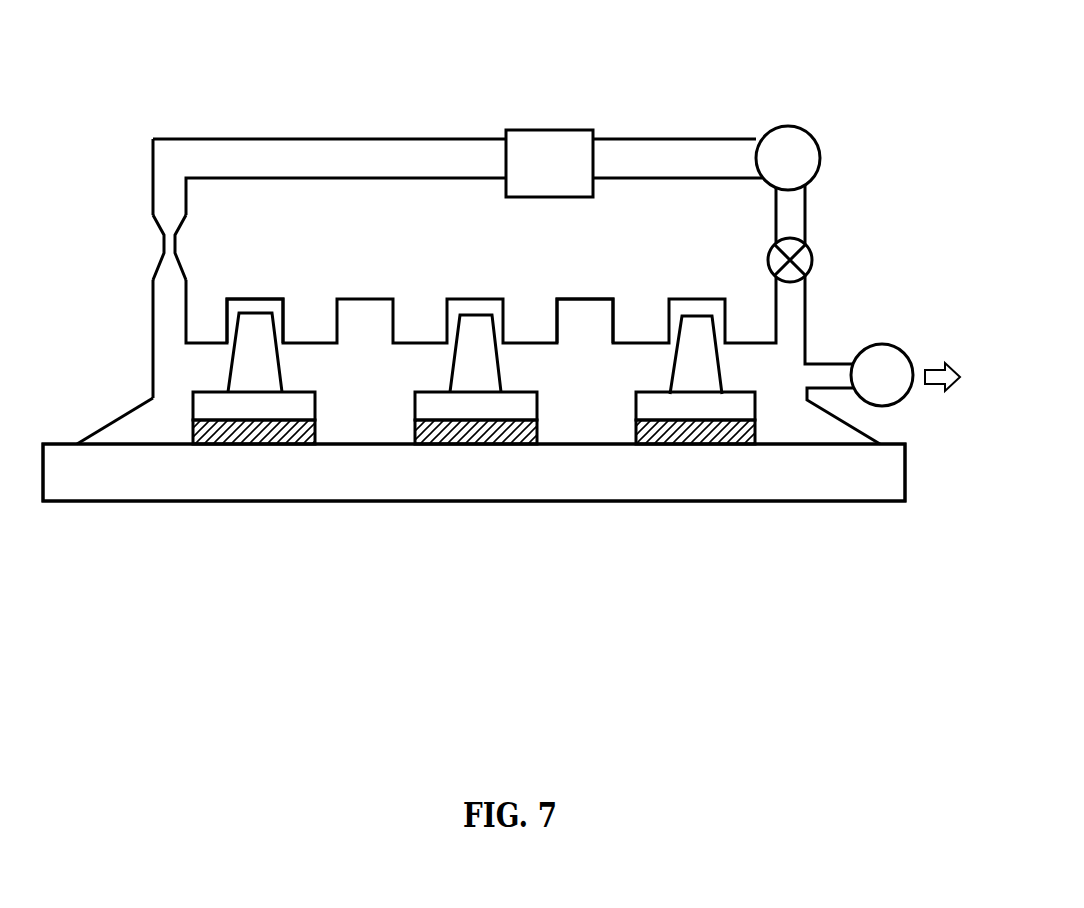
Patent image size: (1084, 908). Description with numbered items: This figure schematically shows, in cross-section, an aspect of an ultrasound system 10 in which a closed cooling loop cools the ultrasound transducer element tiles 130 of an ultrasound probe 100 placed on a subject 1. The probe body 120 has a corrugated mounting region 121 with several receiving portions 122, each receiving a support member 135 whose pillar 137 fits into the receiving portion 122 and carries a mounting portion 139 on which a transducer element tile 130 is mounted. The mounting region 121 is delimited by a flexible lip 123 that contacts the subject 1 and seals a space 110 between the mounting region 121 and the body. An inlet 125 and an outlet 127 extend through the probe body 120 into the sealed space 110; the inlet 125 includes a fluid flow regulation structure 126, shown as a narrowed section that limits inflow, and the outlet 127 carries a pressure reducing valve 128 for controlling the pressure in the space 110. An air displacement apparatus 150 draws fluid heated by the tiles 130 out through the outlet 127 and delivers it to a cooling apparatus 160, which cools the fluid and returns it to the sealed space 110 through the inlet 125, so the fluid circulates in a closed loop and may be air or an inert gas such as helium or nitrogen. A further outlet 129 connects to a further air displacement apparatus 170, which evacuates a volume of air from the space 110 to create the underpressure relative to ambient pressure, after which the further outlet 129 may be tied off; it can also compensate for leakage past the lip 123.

The subject 1 is at (543, 485).
The ultrasound system 10 is at (512, 699).
The ultrasound probe 100 is at (124, 118).
The sealed space 110 is at (372, 427).
The probe body 120 is at (443, 312).
The mounting region 121 is at (252, 312).
The receiving portion 122 is at (585, 312).
The flexible lip 123 is at (127, 423).
The inlet 125 is at (172, 291).
The fluid flow regulation structure 126 is at (173, 247).
The outlet 127 is at (792, 298).
The pressure reducing valve 128 is at (805, 257).
The further outlet 129 is at (808, 378).
The ultrasound transducer element tile 130 is at (712, 433).
The support member 135 is at (693, 320).
The pillar 137 is at (273, 372).
The mounting portion 139 is at (292, 410).
The air displacement apparatus 150 is at (787, 158).
The cooling apparatus 160 is at (563, 138).
The further air displacement apparatus 170 is at (880, 388).